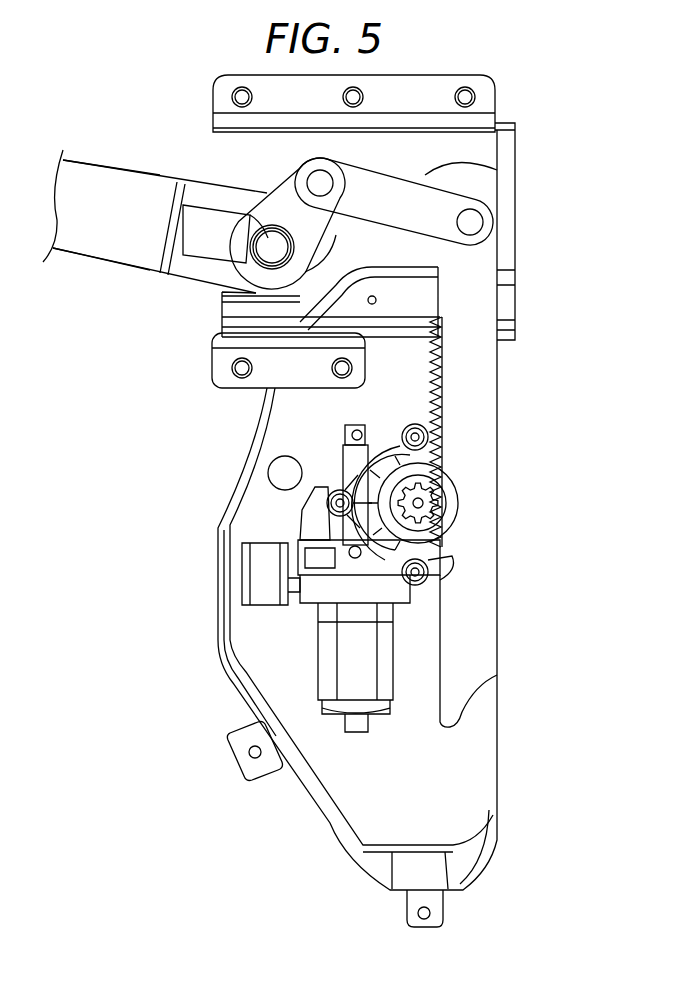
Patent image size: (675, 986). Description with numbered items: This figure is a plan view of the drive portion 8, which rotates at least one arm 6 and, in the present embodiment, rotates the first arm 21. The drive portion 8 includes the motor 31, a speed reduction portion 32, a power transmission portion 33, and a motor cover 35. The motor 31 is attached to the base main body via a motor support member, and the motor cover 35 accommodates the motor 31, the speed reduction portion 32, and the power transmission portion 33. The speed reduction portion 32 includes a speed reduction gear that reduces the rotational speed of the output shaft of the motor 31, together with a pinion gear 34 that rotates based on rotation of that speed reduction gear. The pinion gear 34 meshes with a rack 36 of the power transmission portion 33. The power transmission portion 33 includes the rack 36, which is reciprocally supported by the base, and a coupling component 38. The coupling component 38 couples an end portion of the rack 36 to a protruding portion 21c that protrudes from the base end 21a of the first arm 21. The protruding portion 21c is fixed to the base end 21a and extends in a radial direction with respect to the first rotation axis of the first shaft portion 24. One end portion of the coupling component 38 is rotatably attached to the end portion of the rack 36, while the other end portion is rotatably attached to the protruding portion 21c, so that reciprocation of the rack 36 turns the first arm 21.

The arm 6 is at (133, 275).
The drive portion 8 is at (189, 515).
The first arm 21 is at (133, 275).
The base end 21a is at (233, 300).
The protruding portion 21c is at (312, 168).
The first shaft portion 24 is at (262, 240).
The motor 31 is at (318, 665).
The speed reduction portion 32 is at (385, 433).
The power transmission portion 33 is at (545, 393).
The pinion gear 34 is at (437, 490).
The motor cover 35 is at (217, 625).
The rack 36 is at (499, 553).
The coupling component 38 is at (498, 176).